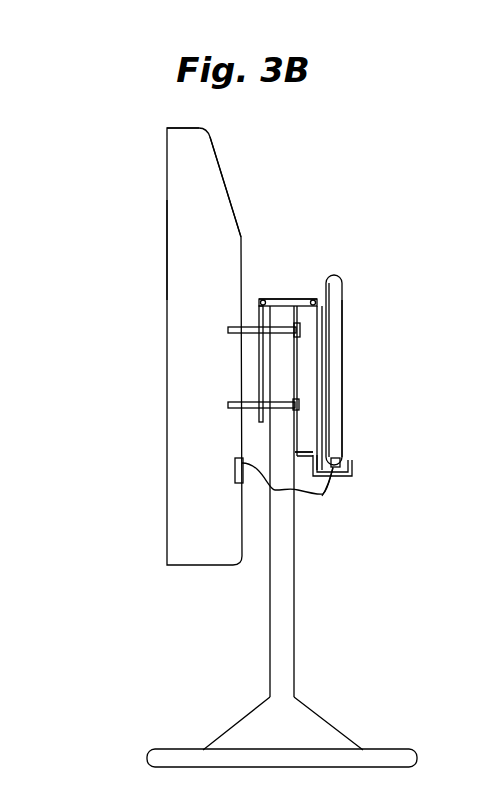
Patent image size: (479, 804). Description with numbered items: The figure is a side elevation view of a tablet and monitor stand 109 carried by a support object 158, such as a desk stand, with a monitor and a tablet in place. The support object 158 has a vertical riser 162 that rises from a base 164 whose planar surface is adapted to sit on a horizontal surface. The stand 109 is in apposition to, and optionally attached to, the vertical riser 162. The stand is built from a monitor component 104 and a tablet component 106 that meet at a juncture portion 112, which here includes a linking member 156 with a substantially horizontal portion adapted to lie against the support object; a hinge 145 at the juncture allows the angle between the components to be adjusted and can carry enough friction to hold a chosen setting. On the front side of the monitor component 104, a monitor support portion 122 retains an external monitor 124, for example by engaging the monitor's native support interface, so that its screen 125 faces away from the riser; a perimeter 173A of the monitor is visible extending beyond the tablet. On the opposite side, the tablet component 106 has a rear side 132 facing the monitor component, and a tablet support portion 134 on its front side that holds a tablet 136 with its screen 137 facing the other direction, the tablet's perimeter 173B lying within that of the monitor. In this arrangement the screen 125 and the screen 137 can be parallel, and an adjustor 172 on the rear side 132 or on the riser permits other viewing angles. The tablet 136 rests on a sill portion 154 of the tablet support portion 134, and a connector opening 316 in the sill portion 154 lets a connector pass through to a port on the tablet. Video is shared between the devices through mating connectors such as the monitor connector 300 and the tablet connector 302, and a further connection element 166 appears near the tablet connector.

The tablet and monitor stand 109 is at (350, 128).
The juncture portion 112 is at (285, 232).
The monitor support portion 122 is at (232, 370).
The monitor 124 is at (167, 152).
The screen 125 is at (167, 252).
The perimeter 173A is at (208, 202).
The linking member 156 is at (288, 297).
The hinge 145 is at (306, 297).
The tablet 136 is at (343, 282).
The perimeter 173B is at (333, 317).
The rear side 132 is at (323, 338).
The tablet support portion 134 is at (360, 374).
The screen 137 is at (343, 410).
The tablet connector 302 is at (340, 458).
The connector 166 is at (353, 464).
The connector opening 316 is at (343, 486).
The sill portion 154 is at (323, 496).
The tablet component 106 is at (311, 492).
The adjustor 172 is at (307, 483).
The vertical riser 162 is at (297, 665).
The support object 158 is at (208, 678).
The base 164 is at (385, 750).
The monitor component 104 is at (255, 430).
The monitor connector 300 is at (235, 475).